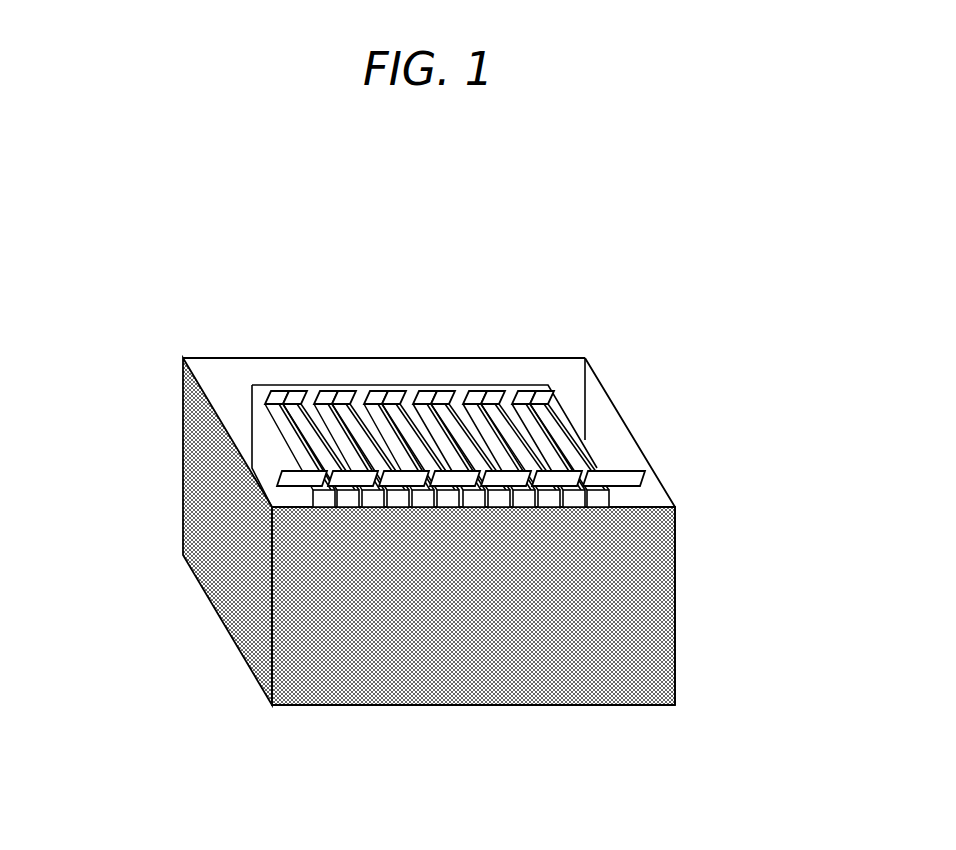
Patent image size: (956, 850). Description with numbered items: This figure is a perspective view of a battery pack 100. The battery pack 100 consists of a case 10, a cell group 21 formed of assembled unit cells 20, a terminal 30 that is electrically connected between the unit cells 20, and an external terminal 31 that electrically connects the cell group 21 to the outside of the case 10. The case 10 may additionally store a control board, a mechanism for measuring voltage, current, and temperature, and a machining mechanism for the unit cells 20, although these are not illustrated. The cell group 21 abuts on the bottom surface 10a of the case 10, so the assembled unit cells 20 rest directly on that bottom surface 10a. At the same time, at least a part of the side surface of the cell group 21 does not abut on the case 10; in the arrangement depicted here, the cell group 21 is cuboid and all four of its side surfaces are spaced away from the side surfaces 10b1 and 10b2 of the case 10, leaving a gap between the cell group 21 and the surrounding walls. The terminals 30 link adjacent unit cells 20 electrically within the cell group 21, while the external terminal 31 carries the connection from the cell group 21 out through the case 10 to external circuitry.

The battery pack 100 is at (87, 235).
The case 10 is at (187, 445).
The bottom surface 10a is at (432, 705).
The side surface 10b1 is at (233, 583).
The side surface 10b2 is at (582, 655).
The unit cell 20 is at (262, 432).
The cell group 21 is at (422, 442).
The terminal 30 is at (475, 385).
The external terminal 31 is at (615, 477).